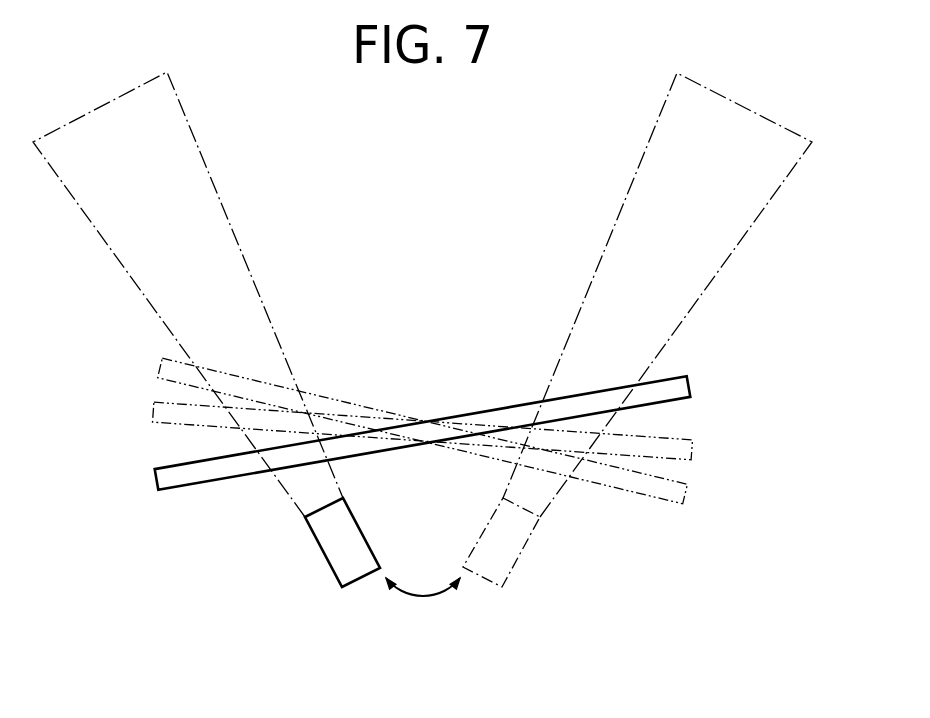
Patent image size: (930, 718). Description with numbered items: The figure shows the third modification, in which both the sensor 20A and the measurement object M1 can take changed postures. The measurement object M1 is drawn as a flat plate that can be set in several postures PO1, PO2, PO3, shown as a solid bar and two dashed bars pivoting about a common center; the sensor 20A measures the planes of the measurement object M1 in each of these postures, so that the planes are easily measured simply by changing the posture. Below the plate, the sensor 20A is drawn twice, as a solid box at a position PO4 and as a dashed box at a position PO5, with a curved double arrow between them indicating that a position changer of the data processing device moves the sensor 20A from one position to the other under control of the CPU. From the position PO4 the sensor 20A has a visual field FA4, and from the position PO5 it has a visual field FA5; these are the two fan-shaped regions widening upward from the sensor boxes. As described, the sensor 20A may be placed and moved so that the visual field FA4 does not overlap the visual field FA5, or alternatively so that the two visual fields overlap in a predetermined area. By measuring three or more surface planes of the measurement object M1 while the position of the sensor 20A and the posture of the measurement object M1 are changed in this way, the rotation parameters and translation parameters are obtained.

The visual field FA4 is at (250, 272).
The visual field FA5 is at (593, 273).
The posture PO1 is at (690, 383).
The posture PO2 is at (691, 443).
The posture PO3 is at (687, 487).
The position PO4 is at (344, 587).
The position PO5 is at (502, 587).
The measurement object M1 is at (433, 397).
The sensor 20A is at (422, 571).